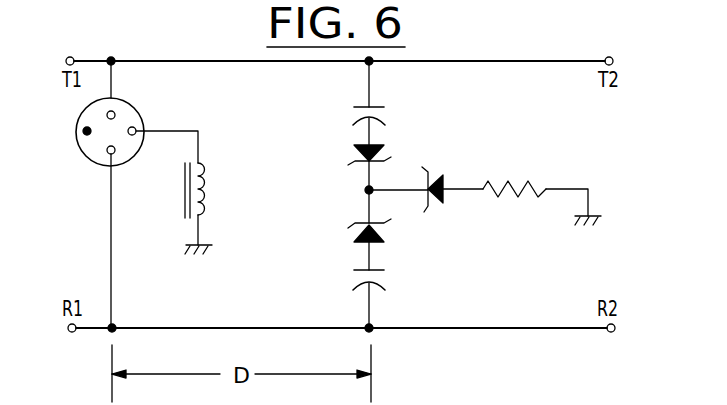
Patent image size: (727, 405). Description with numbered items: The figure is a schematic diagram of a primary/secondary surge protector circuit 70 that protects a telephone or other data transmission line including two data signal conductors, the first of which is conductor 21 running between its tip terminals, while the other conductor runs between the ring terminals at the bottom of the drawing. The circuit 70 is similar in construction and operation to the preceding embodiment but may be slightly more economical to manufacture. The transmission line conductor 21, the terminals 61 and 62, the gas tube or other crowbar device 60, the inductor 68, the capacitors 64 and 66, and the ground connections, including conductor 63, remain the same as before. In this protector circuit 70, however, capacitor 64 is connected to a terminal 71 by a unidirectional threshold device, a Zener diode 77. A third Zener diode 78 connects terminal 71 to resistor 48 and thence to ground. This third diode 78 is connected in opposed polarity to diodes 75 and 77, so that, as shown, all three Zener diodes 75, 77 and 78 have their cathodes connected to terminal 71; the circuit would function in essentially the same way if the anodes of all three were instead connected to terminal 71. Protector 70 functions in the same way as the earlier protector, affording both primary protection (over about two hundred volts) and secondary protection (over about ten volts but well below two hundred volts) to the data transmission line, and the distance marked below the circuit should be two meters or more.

The data signal conductor 21 is at (493, 62).
The resistor 48 is at (517, 181).
The gas tube or other crowbar device 60 is at (94, 152).
The terminal 61 is at (114, 65).
The terminal 62 is at (114, 322).
The conductor 63 is at (163, 129).
The capacitor 64 is at (382, 118).
The capacitor 66 is at (387, 299).
The inductor 68 is at (205, 192).
The primary/secondary surge protector circuit 70 is at (348, 194).
The terminal 71 is at (366, 190).
The Zener diode 75 is at (382, 155).
The Zener diode 77 is at (355, 228).
The third Zener diode 78 is at (433, 198).